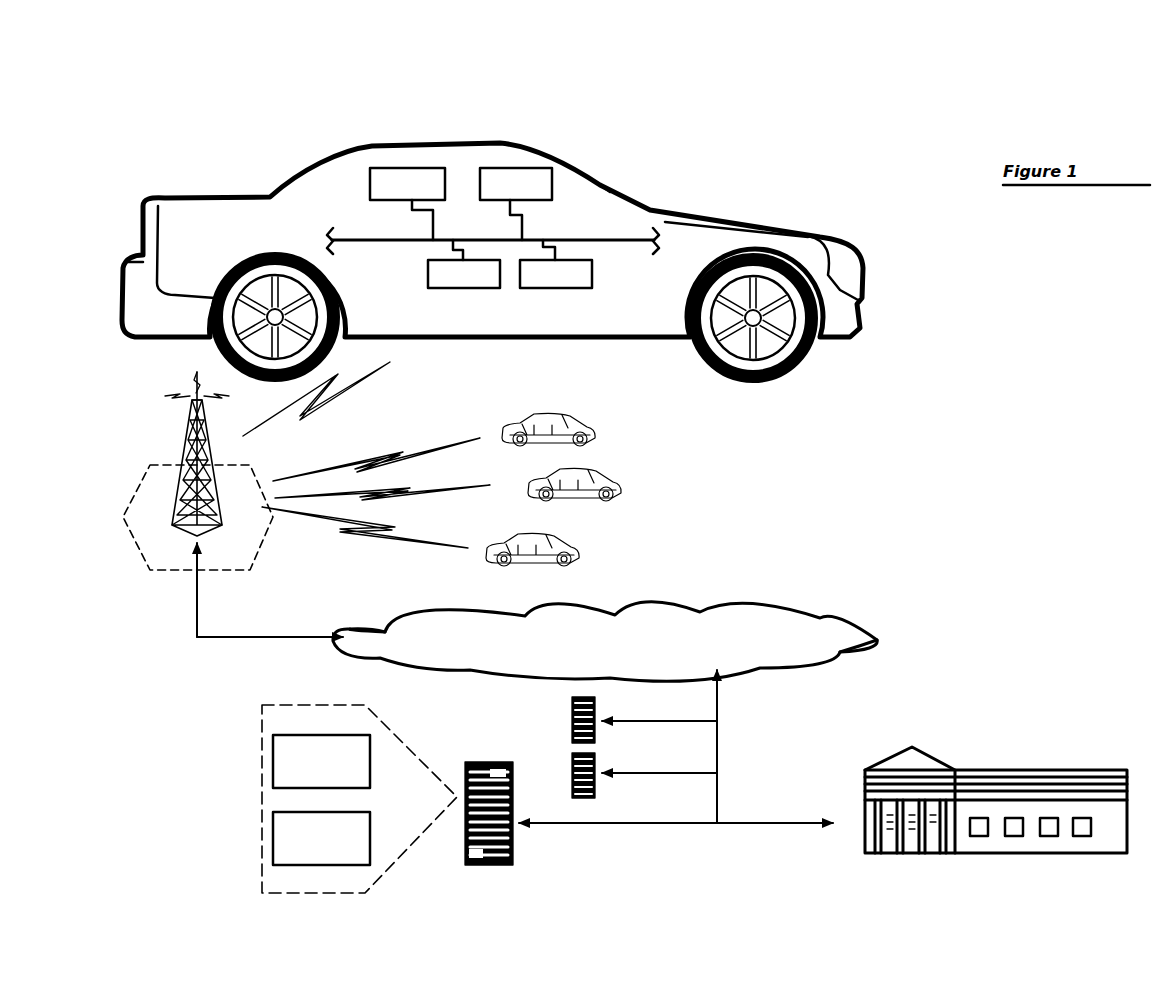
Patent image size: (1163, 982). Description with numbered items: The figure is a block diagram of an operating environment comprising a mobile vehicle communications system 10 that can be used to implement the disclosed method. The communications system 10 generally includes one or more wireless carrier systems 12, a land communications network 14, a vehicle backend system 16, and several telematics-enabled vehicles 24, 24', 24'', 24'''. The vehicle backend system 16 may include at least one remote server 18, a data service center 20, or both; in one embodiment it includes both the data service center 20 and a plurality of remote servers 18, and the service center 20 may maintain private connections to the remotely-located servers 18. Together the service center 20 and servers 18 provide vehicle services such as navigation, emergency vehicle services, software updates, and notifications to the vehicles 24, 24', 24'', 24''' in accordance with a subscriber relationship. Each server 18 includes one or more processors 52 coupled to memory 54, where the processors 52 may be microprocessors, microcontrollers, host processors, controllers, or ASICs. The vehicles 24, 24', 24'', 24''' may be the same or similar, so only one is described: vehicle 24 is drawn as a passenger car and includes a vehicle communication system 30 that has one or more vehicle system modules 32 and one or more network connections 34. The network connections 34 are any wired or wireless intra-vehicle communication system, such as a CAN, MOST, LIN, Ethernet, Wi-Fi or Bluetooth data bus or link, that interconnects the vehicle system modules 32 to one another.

The mobile vehicle communications system 10 is at (1104, 270).
The wireless carrier system 12 is at (238, 578).
The land communications network 14 is at (620, 652).
The vehicle backend system 16 is at (821, 845).
The remote server 18 is at (497, 763).
The data service center 20 is at (866, 796).
The telematics-enabled vehicle 24 is at (492, 260).
The telematics-enabled vehicle 24' is at (574, 420).
The telematics-enabled vehicle 24'' is at (606, 475).
The telematics-enabled vehicle 24''' is at (568, 540).
The vehicle communication system 30 is at (518, 303).
The vehicle system module 32 is at (418, 194).
The network connection 34 is at (571, 227).
The processor 52 is at (333, 771).
The memory 54 is at (333, 848).